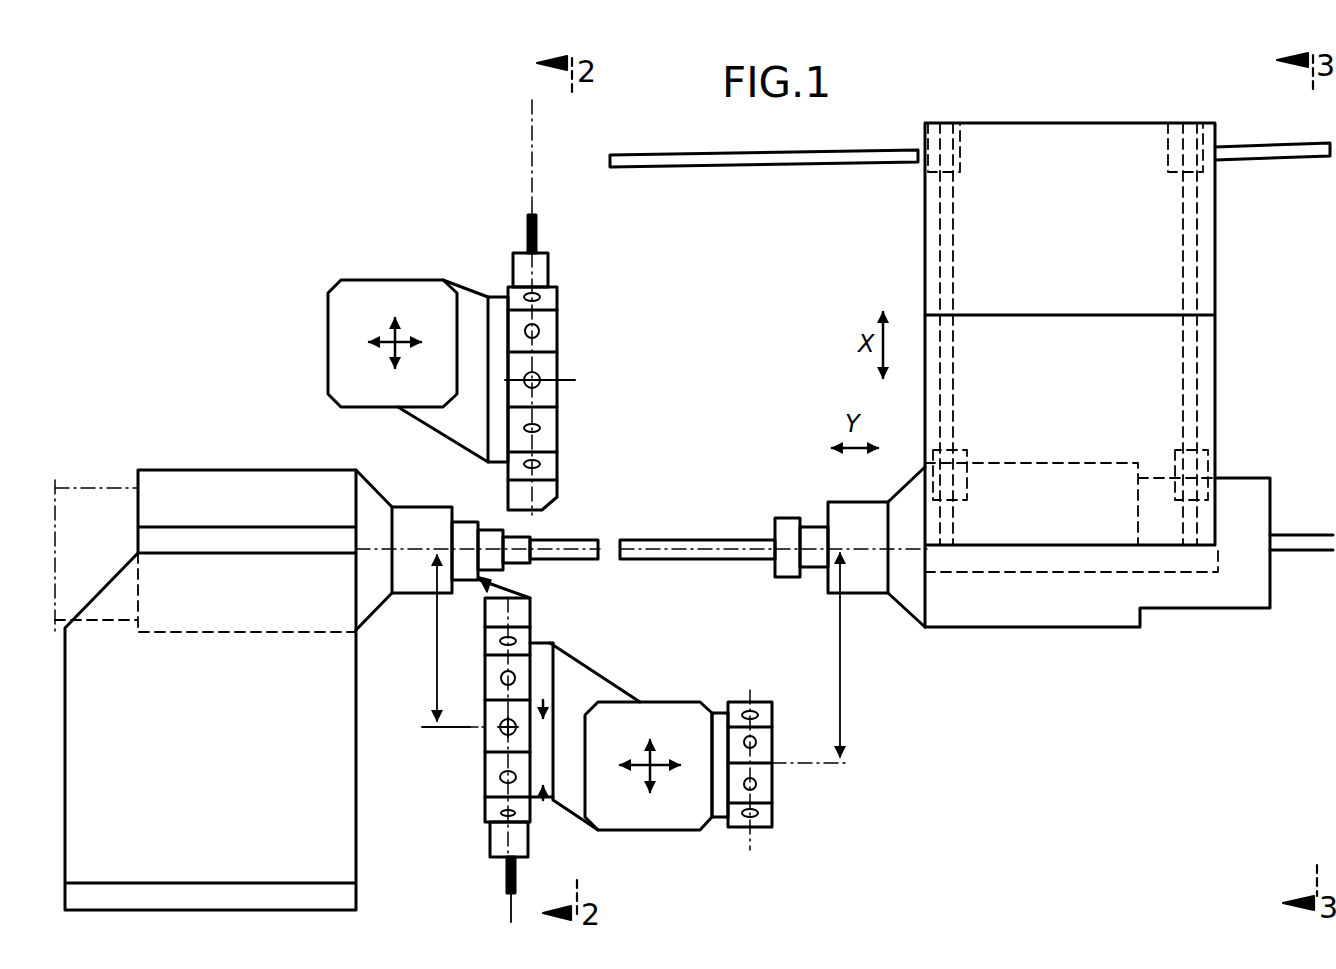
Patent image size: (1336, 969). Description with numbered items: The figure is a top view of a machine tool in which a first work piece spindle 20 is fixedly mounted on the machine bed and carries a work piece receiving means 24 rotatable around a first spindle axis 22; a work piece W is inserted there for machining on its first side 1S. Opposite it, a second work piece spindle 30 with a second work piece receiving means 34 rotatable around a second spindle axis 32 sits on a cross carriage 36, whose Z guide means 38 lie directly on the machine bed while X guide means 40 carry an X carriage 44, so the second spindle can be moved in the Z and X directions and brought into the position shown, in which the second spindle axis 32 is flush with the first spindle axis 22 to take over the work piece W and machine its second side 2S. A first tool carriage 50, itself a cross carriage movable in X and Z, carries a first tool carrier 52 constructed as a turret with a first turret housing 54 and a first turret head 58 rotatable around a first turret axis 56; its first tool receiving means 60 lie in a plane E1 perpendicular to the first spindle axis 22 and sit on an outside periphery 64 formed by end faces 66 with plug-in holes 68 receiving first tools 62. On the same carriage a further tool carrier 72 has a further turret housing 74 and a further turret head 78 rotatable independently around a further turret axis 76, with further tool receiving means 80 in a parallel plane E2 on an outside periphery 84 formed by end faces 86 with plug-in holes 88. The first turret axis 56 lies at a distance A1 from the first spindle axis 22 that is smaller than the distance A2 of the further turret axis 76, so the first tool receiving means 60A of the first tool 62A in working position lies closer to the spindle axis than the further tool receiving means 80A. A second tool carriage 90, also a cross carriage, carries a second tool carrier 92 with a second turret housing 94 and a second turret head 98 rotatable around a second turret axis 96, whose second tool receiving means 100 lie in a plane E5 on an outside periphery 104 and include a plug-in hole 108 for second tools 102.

The first work piece spindle 20 is at (250, 490).
The first spindle axis 22 is at (380, 546).
The work piece receiving means 24 is at (410, 515).
The first side 1S is at (487, 525).
The work piece W is at (460, 512).
The second side 2S is at (790, 528).
The second work piece receiving means 34 is at (862, 578).
The second spindle axis 32 is at (905, 548).
The cross carriage 36 is at (1218, 350).
The X guide means 40 is at (1195, 232).
The X carriage 44 is at (1175, 430).
The second work piece spindle 30 is at (1100, 603).
The Z guide means 38 is at (1302, 155).
The distance of first turret axis from first spindle axis A1 is at (444, 641).
The distance of further turret axis from first spindle axis A2 is at (811, 658).
The second tool carriage 90 is at (365, 295).
The second turret housing 94 is at (455, 325).
The second tool carrier 92 is at (515, 325).
The second tool receiving means 100 is at (470, 272).
The second turret head 98 is at (505, 290).
The second tools 102 is at (543, 268).
The plane E5 is at (530, 105).
The outside periphery 104 is at (545, 340).
The second turret axis 96 is at (570, 378).
The plug-in hole 108 is at (540, 428).
The first turret axis 56 is at (490, 745).
The first turret head 58 is at (490, 772).
The first tool receiving means 60 is at (488, 812).
The first tools 62 is at (503, 853).
The plane E1 is at (495, 838).
The plug-in holes 68 is at (500, 680).
The first tool occupying a working position 62A is at (495, 585).
The first tool receiving means occupying a working position 60A is at (500, 625).
The outside periphery 64 is at (530, 655).
The end faces 66 is at (545, 665).
The first tool carrier 52 is at (545, 805).
The first tool carriage 50 is at (667, 820).
The first turret housing 54 is at (665, 695).
The further tool carrier 72 is at (716, 834).
The plane E2 is at (750, 838).
The further turret housing 74 is at (722, 716).
The further tool receiving means occupying a working position 80A is at (752, 705).
The plug-in holes 88 is at (760, 720).
The outside periphery 84 is at (763, 737).
The further turret axis 76 is at (770, 768).
The end faces 86 is at (768, 790).
The further turret head 78 is at (770, 812).
The further tool receiving means 80 is at (765, 828).